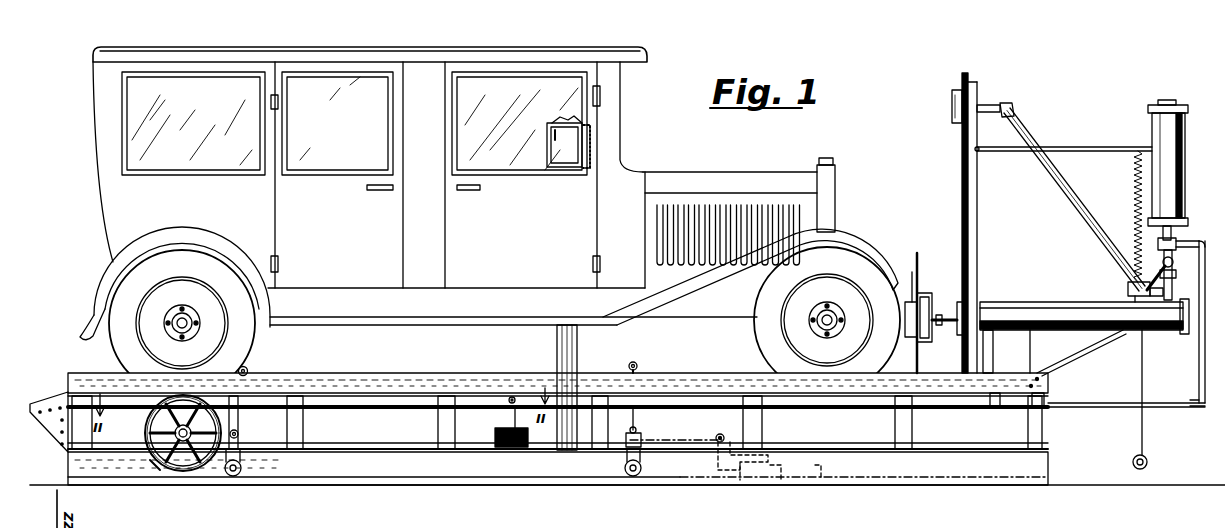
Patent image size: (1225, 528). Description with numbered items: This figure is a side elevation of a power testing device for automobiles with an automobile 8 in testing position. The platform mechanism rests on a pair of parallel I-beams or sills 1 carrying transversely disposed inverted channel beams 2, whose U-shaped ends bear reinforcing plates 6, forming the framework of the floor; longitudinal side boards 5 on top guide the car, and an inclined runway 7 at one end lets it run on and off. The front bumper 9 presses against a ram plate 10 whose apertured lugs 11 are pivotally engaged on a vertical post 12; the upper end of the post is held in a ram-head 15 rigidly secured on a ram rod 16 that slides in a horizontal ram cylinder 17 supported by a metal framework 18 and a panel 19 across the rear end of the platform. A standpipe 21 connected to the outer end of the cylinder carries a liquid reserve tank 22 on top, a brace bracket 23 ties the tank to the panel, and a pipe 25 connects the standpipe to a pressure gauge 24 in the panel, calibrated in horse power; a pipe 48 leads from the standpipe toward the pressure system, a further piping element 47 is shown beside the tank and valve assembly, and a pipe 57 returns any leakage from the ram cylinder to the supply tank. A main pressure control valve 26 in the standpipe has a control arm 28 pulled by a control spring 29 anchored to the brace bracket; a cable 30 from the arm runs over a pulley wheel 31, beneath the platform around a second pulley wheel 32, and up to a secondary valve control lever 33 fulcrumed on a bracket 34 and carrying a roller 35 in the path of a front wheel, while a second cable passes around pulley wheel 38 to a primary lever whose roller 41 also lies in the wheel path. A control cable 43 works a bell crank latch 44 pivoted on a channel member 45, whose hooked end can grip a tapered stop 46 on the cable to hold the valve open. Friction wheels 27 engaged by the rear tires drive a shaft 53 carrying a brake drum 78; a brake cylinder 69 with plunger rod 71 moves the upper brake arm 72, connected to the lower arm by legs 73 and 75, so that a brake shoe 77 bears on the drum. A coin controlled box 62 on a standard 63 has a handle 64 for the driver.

The I-beams or sills 1 is at (385, 474).
The inverted channel beams 2 is at (905, 420).
The flanges or side boards 5 is at (697, 388).
The reinforcing plates 6 is at (743, 417).
The inclined runway 7 is at (58, 400).
The automobile 8 is at (617, 176).
The front bumper 9 is at (912, 272).
The ram plate 10 is at (920, 272).
The apertured lugs 11 is at (912, 350).
The vertical leg or post 12 is at (958, 347).
The ram-head 15 is at (928, 296).
The ram rod 16 is at (944, 325).
The ram cylinder 17 is at (1068, 312).
The metal framework 18 is at (1088, 357).
The panel or board 19 is at (972, 252).
The standpipe 21 is at (1172, 286).
The liquid reserve tank 22 is at (1180, 178).
The brace bracket 23 is at (1098, 147).
The pressure gauge 24 is at (953, 110).
The pipe 25 is at (1020, 122).
The main pressure control valve 26 is at (1160, 256).
The friction wheels 27 is at (187, 462).
The valve control lever or arm 28 is at (1130, 272).
The control spring 29 is at (1134, 186).
The cable 30 is at (1144, 388).
The pulley wheel 31 is at (1132, 462).
The second pulley wheel 32 is at (622, 478).
The secondary valve control lever 33 is at (640, 372).
The bracket 34 is at (641, 432).
The roller 35 is at (632, 362).
The pulley wheel 38 is at (230, 478).
The roller 41 is at (249, 370).
The control cable 43 is at (392, 442).
The bell crank latch 44 is at (718, 472).
The channel member 45 is at (820, 482).
The tapered stop or block 46 is at (776, 481).
The pipe 47 is at (1196, 240).
The pipe 48 is at (1112, 408).
The shaft 53 is at (163, 470).
The pipe 57 is at (1000, 358).
The coin controlled box 62 is at (547, 158).
The standard 63 is at (557, 338).
The control lever or handle 64 is at (585, 130).
The brake cylinder 69 is at (506, 446).
The plunger rod 71 is at (510, 420).
The upper brake arm 72 is at (345, 400).
The leg 73 is at (245, 415).
The leg 75 is at (239, 434).
The brake shoe 77 is at (152, 399).
The brake drum 78 is at (160, 436).